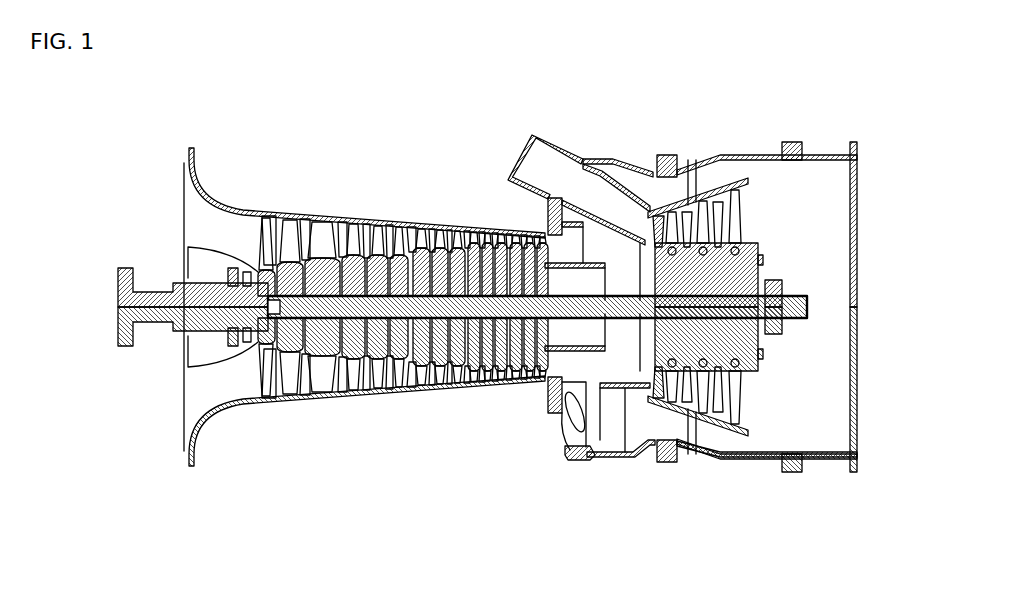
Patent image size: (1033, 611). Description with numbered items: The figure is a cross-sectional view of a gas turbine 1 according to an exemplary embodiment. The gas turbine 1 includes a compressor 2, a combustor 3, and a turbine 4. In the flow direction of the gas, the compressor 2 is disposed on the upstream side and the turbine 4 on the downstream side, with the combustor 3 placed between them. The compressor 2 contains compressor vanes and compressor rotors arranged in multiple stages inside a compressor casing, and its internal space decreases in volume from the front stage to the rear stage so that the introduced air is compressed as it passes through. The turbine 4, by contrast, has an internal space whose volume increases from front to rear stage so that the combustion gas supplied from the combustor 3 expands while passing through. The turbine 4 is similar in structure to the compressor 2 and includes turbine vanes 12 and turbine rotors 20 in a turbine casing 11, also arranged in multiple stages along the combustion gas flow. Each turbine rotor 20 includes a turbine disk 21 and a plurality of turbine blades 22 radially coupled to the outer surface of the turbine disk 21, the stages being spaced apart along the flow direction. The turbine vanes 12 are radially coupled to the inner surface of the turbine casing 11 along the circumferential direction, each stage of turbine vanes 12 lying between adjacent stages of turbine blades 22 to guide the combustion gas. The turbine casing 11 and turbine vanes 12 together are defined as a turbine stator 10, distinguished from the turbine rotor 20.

The gas turbine 1 is at (173, 95).
The compressor 2 is at (340, 205).
The combustor 3 is at (552, 139).
The turbine 4 is at (765, 186).
The turbine stator 10 is at (745, 511).
The turbine casing 11 is at (737, 437).
The turbine vane 12 is at (702, 412).
The turbine rotor 20 is at (906, 222).
The turbine disk 21 is at (753, 273).
The turbine blade 22 is at (752, 225).